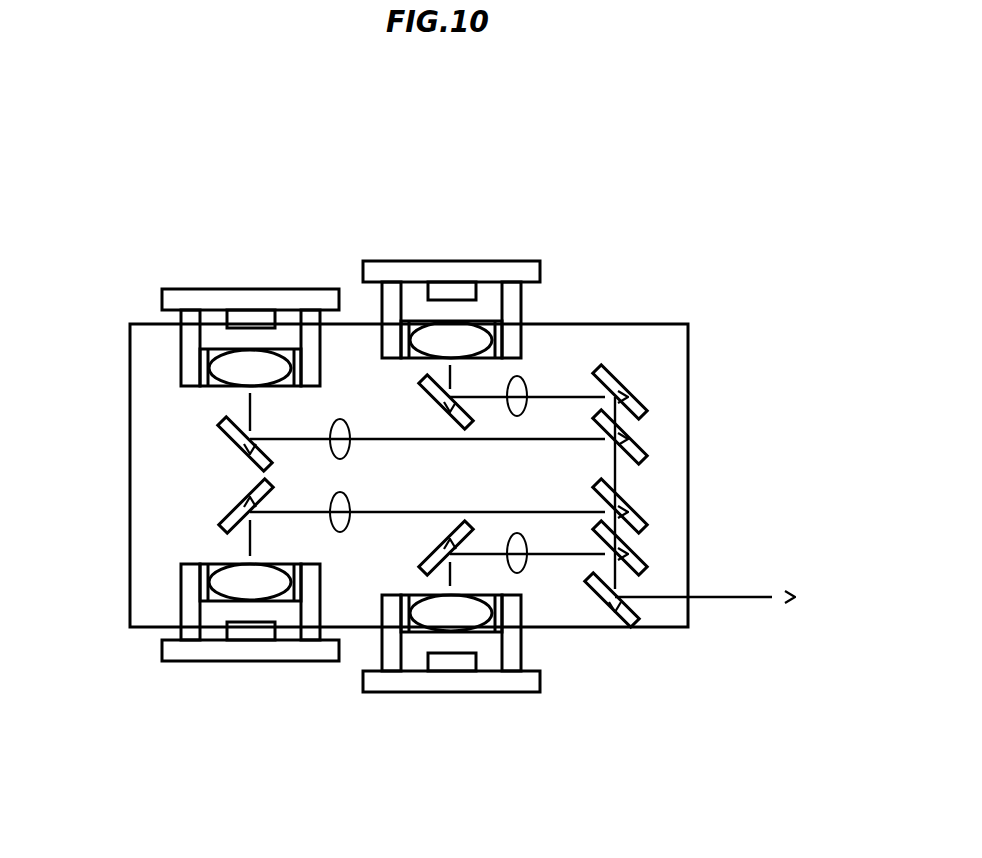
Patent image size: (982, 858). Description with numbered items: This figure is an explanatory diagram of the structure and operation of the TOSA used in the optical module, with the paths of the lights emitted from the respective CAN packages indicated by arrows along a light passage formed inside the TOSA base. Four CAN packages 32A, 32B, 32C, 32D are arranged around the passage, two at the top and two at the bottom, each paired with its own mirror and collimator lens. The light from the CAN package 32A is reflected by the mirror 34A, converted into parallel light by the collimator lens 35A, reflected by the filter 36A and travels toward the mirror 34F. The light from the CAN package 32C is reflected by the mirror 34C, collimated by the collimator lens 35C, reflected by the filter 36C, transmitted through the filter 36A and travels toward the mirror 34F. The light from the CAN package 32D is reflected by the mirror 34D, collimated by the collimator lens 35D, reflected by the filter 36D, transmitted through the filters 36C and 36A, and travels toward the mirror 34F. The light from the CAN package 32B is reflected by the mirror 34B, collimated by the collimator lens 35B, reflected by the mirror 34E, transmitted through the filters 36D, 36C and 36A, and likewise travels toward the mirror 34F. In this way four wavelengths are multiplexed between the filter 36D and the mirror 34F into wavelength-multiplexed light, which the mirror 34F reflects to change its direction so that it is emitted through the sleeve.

The CAN package 32A is at (464, 713).
The CAN package 32B is at (463, 244).
The CAN package 32C is at (238, 680).
The CAN package 32D is at (263, 272).
The mirror 34A is at (428, 570).
The mirror 34B is at (458, 410).
The mirror 34C is at (225, 515).
The mirror 34D is at (222, 423).
The mirror 34E is at (634, 397).
The mirror 34F is at (632, 625).
The collimator lens 35A is at (520, 562).
The collimator lens 35B is at (518, 388).
The collimator lens 35C is at (342, 525).
The collimator lens 35D is at (342, 423).
The filter 36A is at (634, 556).
The filter 36C is at (634, 514).
The filter 36D is at (634, 443).